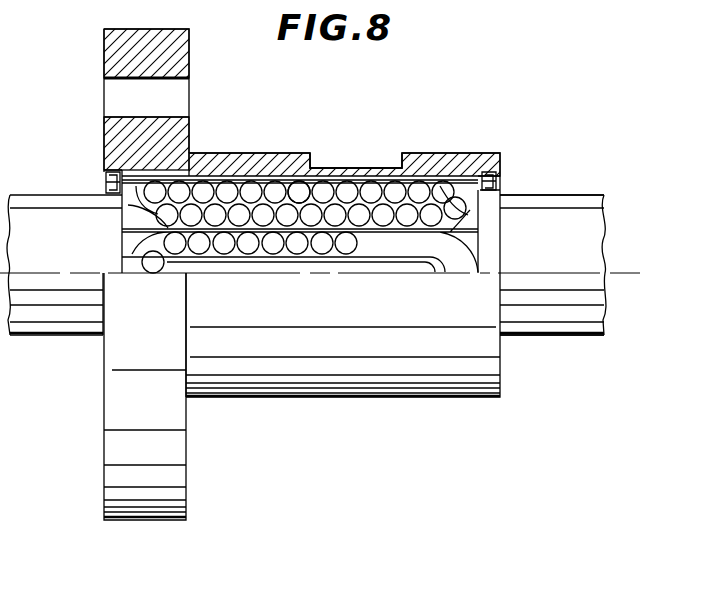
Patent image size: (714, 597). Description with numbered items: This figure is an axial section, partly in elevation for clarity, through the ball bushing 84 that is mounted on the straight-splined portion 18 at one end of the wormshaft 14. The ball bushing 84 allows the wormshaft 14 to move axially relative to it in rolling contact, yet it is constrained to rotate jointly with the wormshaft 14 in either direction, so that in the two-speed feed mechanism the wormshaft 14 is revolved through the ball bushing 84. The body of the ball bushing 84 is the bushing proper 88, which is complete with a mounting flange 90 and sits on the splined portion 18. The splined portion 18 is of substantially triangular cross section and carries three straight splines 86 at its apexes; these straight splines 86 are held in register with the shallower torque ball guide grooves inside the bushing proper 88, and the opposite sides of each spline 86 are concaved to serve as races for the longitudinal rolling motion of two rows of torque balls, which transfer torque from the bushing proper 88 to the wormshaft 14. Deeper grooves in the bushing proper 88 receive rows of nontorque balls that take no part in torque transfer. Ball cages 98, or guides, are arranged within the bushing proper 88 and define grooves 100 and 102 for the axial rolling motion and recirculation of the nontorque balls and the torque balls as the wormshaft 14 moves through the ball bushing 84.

The wormshaft 14 is at (58, 192).
The straight-splined portion 18 is at (563, 220).
The ball bushing 84 is at (403, 146).
The straight splines 86 is at (596, 200).
The bushing proper 88 is at (455, 162).
The mounting flange 90 is at (158, 57).
The ball cages 98 is at (474, 217).
The groove 100 is at (290, 185).
The groove 102 is at (384, 230).